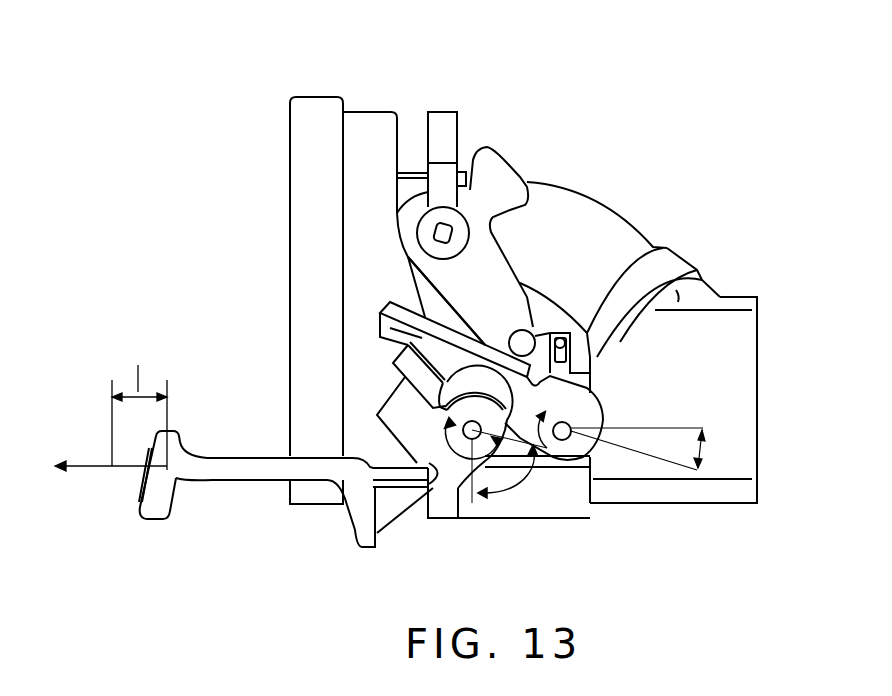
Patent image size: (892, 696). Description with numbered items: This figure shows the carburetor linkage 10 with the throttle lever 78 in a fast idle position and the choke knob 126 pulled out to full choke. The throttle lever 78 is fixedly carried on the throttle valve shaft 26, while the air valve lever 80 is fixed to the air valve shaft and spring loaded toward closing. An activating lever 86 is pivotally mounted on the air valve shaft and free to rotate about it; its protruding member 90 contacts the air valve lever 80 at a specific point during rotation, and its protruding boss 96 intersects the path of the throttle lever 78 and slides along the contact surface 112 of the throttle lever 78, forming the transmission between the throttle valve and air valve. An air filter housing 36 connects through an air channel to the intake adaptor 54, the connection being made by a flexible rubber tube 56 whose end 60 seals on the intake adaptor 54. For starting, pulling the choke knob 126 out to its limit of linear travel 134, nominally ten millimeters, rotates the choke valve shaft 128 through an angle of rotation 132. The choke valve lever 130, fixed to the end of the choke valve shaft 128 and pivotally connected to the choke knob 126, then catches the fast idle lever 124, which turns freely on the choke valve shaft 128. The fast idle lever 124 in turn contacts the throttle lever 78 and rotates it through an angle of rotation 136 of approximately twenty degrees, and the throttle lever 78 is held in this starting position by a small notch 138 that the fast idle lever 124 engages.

The vehicle hood latch assembly 10 is at (403, 80).
The throttle valve shaft 26 is at (600, 400).
The air filter housing 36 is at (308, 97).
The intake adaptor 54 is at (723, 377).
The flexible rubber tube 56 is at (630, 222).
The end of rubber tube 60 is at (690, 262).
The throttle lever 78 is at (387, 306).
The air valve lever 80 is at (445, 110).
The activating lever 86 is at (503, 250).
The protruding member 90 is at (497, 148).
The protruding boss 96 is at (527, 328).
The contact surface 112 is at (445, 320).
The fast idle lever 124 is at (407, 381).
The choke knob 126 is at (212, 482).
The choke valve shaft 128 is at (417, 463).
The choke valve lever 130 is at (457, 473).
The angle of rotation 132 is at (510, 483).
The limit of linear travel 134 is at (138, 365).
The angle of rotation 136 is at (700, 450).
The notch 138 is at (378, 337).